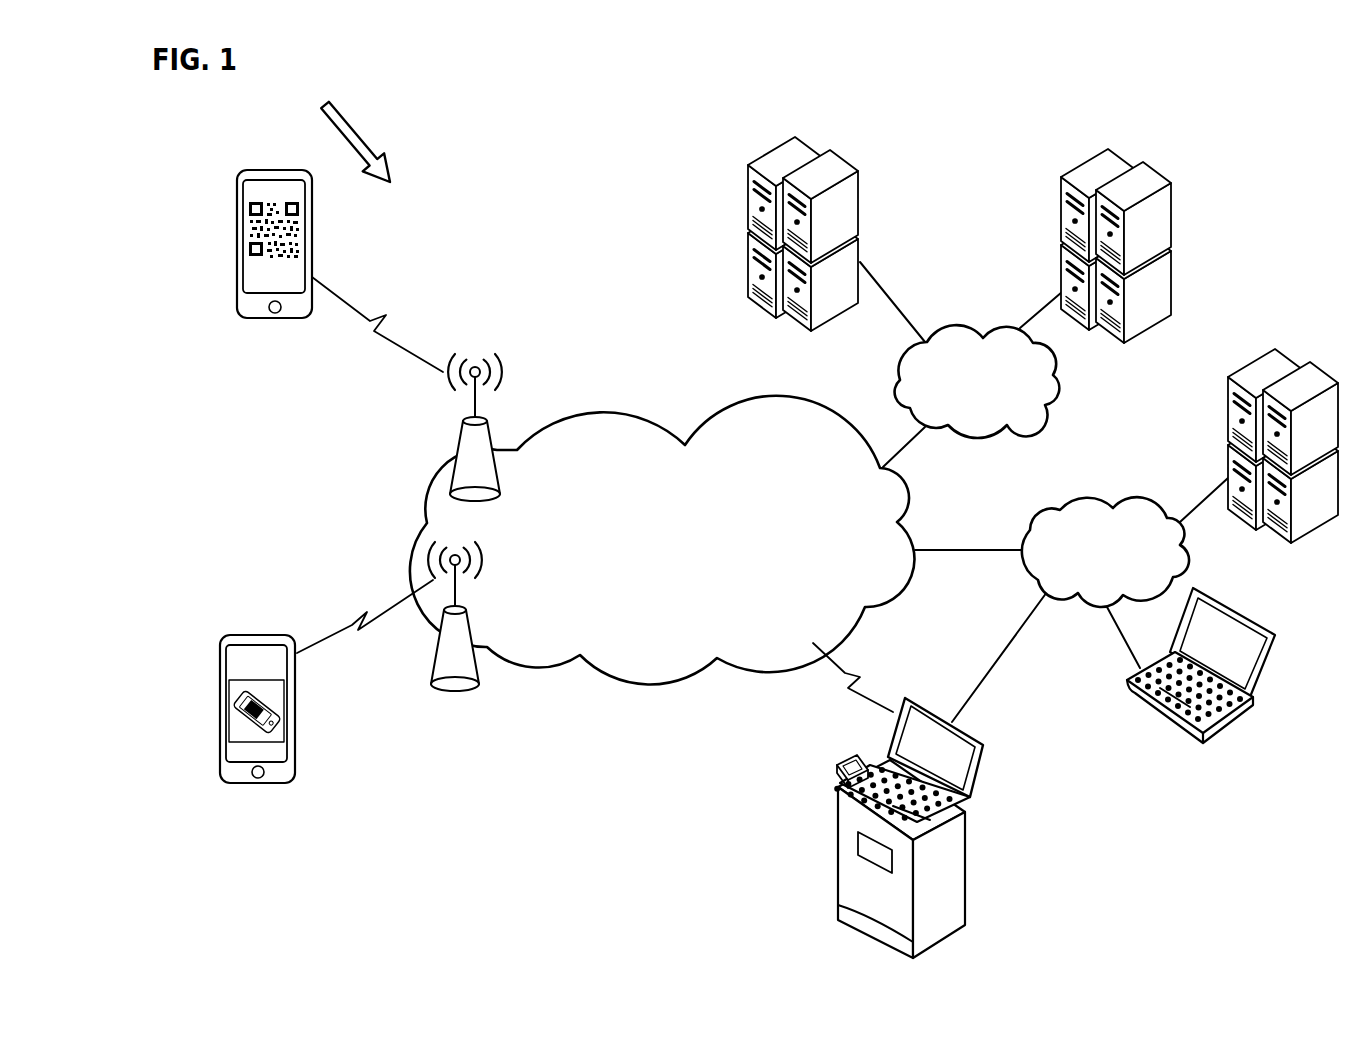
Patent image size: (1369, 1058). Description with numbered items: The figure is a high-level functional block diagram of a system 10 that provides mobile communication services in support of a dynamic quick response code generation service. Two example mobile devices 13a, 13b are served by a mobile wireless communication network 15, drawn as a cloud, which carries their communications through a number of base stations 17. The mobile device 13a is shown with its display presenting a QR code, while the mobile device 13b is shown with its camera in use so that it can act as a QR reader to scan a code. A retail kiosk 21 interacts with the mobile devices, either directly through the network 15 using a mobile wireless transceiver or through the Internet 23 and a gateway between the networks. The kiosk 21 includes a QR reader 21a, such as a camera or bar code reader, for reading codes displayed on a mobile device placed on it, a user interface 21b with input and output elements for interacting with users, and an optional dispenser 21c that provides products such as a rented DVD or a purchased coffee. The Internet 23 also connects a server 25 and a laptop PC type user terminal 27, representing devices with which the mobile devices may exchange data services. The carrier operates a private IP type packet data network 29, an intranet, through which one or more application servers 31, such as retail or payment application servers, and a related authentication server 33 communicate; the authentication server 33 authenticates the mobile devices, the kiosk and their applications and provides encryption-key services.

The system 10 is at (345, 133).
The mobile device 13a is at (237, 223).
The mobile device 13b is at (220, 688).
The mobile wireless communication network 15 is at (567, 420).
The base station 17 is at (458, 447).
The retail kiosk 21 is at (894, 828).
The QR reader 21a is at (838, 775).
The user interface 21b is at (953, 775).
The dispenser 21c is at (858, 847).
The Internet 23 is at (1030, 530).
The server 25 is at (1228, 456).
The laptop PC type user terminal 27 is at (1160, 715).
The private IP type packet data network 29 is at (1057, 392).
The application server 31 is at (858, 185).
The authentication server 33 is at (1172, 248).